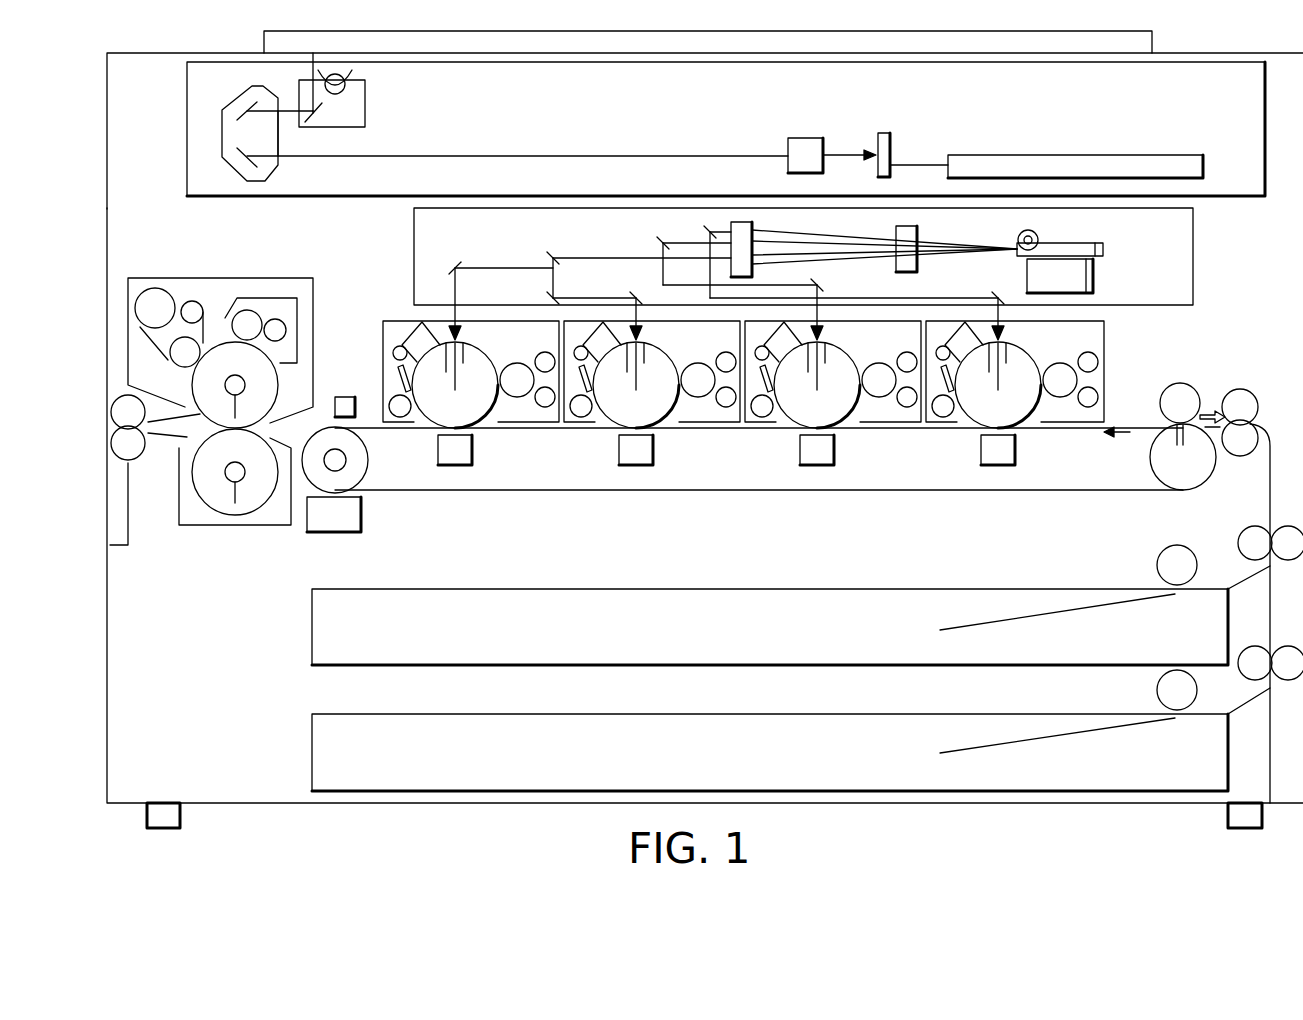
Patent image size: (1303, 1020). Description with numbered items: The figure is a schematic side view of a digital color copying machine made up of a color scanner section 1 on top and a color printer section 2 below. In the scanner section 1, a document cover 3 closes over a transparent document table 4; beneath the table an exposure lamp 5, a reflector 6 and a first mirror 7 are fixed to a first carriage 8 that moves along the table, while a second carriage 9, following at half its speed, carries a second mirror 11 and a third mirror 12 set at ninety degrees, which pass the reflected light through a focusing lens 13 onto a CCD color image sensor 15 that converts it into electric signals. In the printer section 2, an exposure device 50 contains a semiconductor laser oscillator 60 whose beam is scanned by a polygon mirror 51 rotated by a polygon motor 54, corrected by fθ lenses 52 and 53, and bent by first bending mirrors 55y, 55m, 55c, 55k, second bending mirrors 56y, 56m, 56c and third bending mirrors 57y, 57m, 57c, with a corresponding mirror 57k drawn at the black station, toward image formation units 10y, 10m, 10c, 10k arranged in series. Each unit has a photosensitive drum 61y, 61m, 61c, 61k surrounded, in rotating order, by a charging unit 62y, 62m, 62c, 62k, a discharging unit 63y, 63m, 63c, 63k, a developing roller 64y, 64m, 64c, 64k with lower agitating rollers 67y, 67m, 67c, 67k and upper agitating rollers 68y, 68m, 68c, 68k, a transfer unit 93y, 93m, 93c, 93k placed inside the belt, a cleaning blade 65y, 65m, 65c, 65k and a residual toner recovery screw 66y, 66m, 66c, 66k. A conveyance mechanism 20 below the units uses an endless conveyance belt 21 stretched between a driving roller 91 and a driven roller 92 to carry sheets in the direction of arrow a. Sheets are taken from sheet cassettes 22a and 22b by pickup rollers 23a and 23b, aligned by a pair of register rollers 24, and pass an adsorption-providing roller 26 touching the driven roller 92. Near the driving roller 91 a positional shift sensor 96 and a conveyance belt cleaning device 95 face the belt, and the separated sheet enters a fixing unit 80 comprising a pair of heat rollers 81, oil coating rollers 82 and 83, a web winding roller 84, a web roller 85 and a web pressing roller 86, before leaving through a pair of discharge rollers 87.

The color scanner section 1 is at (675, 103).
The color printer section 2 is at (355, 250).
The document cover 3 is at (612, 44).
The document table 4 is at (563, 62).
The exposure lamp 5 is at (348, 74).
The reflector 6 is at (352, 100).
The first mirror 7 is at (316, 124).
The first carriage 8 is at (365, 97).
The second carriage 9 is at (272, 172).
The second mirror 11 is at (242, 101).
The third mirror 12 is at (238, 164).
The focusing lens 13 is at (808, 137).
The CCD color image sensor 15 is at (884, 133).
The conveyance mechanism 20 is at (1078, 492).
The conveyance belt 21 is at (1135, 420).
The sheet cassette 22a is at (312, 628).
The sheet cassette 22b is at (312, 753).
The pickup roller 23a is at (1156, 555).
The pickup roller 23b is at (1156, 690).
The register rollers 24 is at (1242, 389).
The adsorption-providing roller 26 is at (1186, 383).
The exposure device 50 is at (1195, 246).
The polygon mirror 51 is at (1103, 250).
The fθ lens 52 is at (918, 235).
The fθ lens 53 is at (752, 230).
The polygon motor 54 is at (1093, 280).
The first bending mirror 55k is at (452, 262).
The first bending mirror 55c is at (549, 256).
The first bending mirror 55m is at (660, 235).
The first bending mirror 55y is at (706, 235).
The second bending mirror 56c is at (550, 300).
The second bending mirror 56m is at (663, 248).
The second bending mirror 56y is at (712, 242).
The mirror (black) 57k is at (455, 304).
The third bending mirror 57c is at (640, 280).
The third bending mirror 57m is at (836, 282).
The third bending mirror 57y is at (1010, 282).
The semiconductor laser oscillator 60 is at (1030, 231).
The image formation unit 10k is at (496, 418).
The image formation unit 10c is at (677, 418).
The image formation unit 10m is at (858, 418).
The image formation unit 10y is at (1039, 418).
The photosensitive drum 61k is at (512, 341).
The photosensitive drum 61c is at (693, 341).
The photosensitive drum 61m is at (874, 341).
The photosensitive drum 61y is at (1033, 346).
The charging unit 62k is at (418, 322).
The charging unit 62c is at (598, 330).
The charging unit 62m is at (790, 332).
The charging unit 62y is at (972, 340).
The discharging unit 63k is at (393, 350).
The discharging unit 63c is at (578, 348).
The discharging unit 63m is at (760, 346).
The discharging unit 63y is at (945, 346).
The developing roller 64k is at (517, 398).
The developing roller 64c is at (698, 398).
The developing roller 64m is at (879, 398).
The developing roller 64y is at (1060, 398).
The cleaning blade 65k is at (398, 373).
The cleaning blade 65c is at (572, 402).
The cleaning blade 65m is at (752, 402).
The cleaning blade 65y is at (933, 402).
The residual toner recovery screw 66k is at (391, 402).
The residual toner recovery screw 66c is at (586, 417).
The residual toner recovery screw 66m is at (767, 417).
The residual toner recovery screw 66y is at (948, 417).
The lower agitating roller 67k is at (545, 408).
The lower agitating roller 67c is at (726, 408).
The lower agitating roller 67m is at (907, 408).
The lower agitating roller 67y is at (1090, 408).
The upper agitating roller 68k is at (548, 343).
The upper agitating roller 68c is at (729, 343).
The upper agitating roller 68m is at (910, 343).
The upper agitating roller 68y is at (1099, 360).
The fixing unit 80 is at (322, 302).
The heat rollers 81 is at (235, 516).
The oil coating roller 82 is at (280, 320).
The oil coating roller 83 is at (247, 310).
The web winding roller 84 is at (192, 301).
The web roller 85 is at (155, 288).
The web pressing roller 86 is at (173, 363).
The discharge rollers 87 is at (131, 462).
The driving roller 91 is at (360, 488).
The driven roller 92 is at (1150, 470).
The transfer unit 93k is at (452, 467).
The transfer unit 93c is at (630, 467).
The transfer unit 93m is at (811, 467).
The transfer unit 93y is at (992, 467).
The conveyance belt cleaning device 95 is at (338, 533).
The positional shift sensor 96 is at (333, 405).